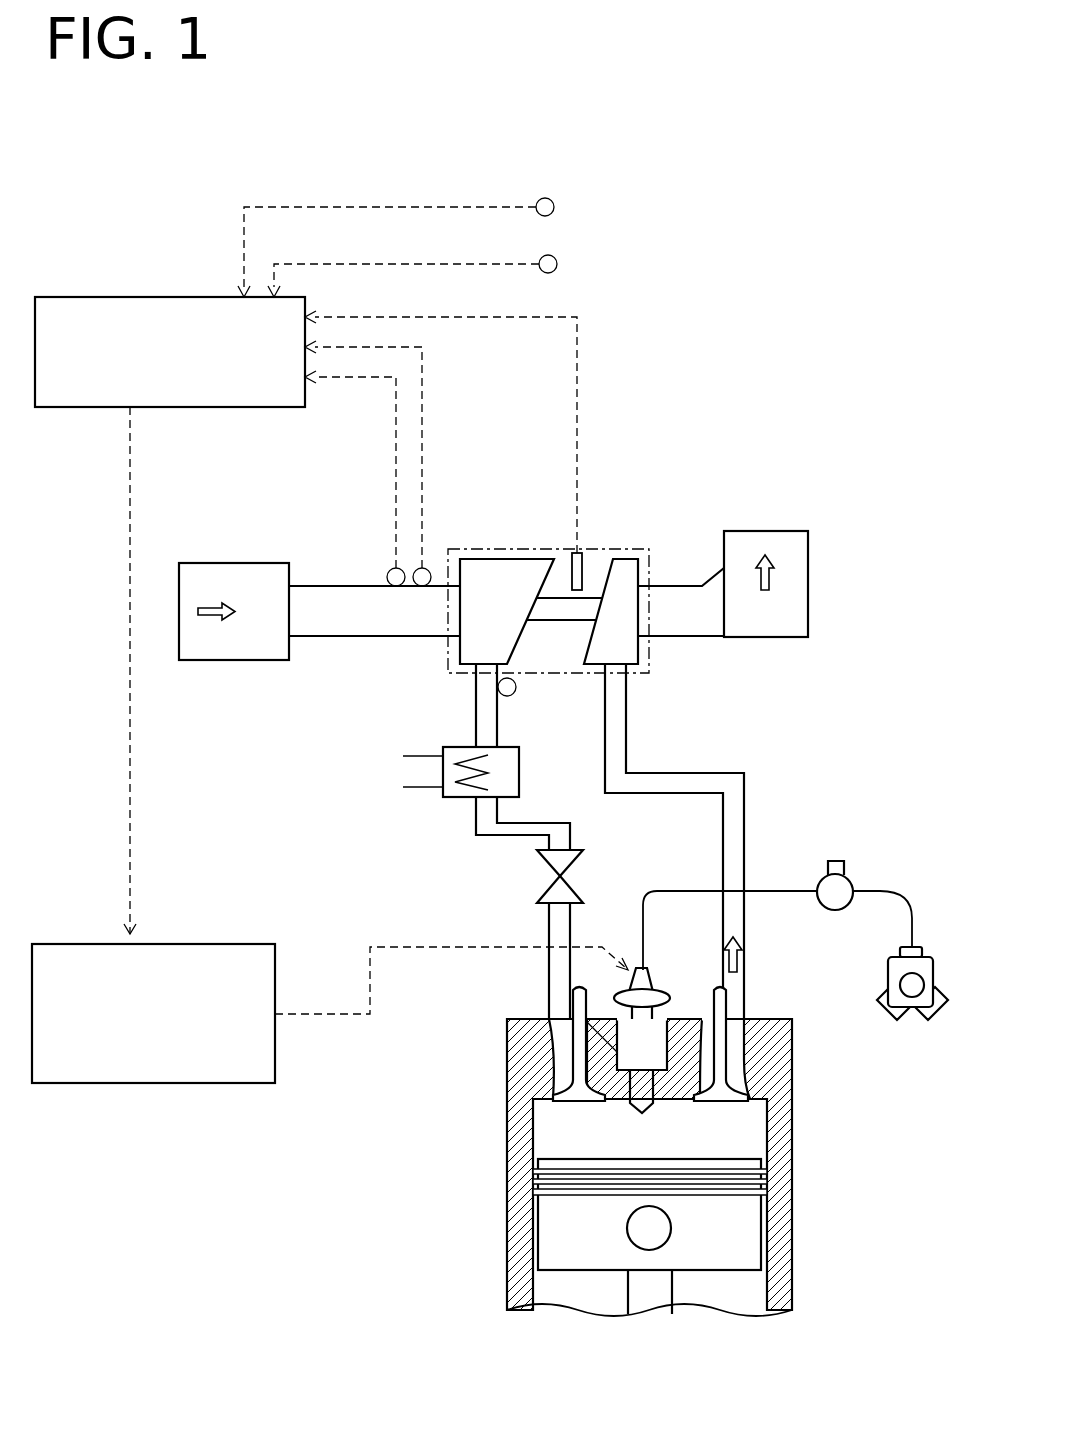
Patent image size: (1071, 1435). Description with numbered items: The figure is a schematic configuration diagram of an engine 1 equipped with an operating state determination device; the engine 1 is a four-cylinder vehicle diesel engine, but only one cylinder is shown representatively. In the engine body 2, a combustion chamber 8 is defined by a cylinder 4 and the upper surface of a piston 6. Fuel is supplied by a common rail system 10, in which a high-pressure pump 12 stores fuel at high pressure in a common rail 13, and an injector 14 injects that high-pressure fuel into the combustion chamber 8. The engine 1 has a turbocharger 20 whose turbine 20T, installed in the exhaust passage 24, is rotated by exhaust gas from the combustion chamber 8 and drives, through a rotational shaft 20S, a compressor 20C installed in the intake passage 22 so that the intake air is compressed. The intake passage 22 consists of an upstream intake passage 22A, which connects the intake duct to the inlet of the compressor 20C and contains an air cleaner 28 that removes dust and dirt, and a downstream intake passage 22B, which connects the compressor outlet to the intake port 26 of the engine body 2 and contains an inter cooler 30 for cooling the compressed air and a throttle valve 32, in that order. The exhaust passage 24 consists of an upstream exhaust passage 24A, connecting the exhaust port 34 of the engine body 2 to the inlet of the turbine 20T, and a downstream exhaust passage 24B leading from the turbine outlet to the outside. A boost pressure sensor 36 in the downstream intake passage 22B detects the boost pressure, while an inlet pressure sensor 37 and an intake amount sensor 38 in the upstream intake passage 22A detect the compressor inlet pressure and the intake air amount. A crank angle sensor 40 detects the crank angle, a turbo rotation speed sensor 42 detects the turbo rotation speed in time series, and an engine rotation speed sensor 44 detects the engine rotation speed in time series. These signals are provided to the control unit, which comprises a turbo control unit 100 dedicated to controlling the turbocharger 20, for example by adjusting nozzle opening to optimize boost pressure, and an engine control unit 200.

The engine 1 is at (858, 160).
The engine body 2 is at (473, 1018).
The cylinder 4 is at (792, 1210).
The piston 6 is at (753, 1258).
The combustion chamber 8 is at (745, 1130).
The common rail system 10 is at (866, 838).
The high-pressure pump 12 is at (930, 957).
The common rail 13 is at (841, 910).
The injector 14 is at (648, 972).
The turbocharger 20 is at (553, 574).
The compressor 20C is at (460, 650).
The rotational shaft 20S is at (553, 620).
The turbine 20T is at (640, 575).
The intake passage 22 is at (420, 666).
The upstream intake passage 22A is at (325, 586).
The downstream intake passage 22B is at (473, 827).
The exhaust passage 24 is at (769, 775).
The upstream exhaust passage 24A is at (680, 793).
The downstream exhaust passage 24B is at (808, 590).
The intake port 26 is at (558, 1050).
The air cleaner 28 is at (229, 563).
The inter cooler 30 is at (519, 795).
The throttle valve 32 is at (537, 895).
The exhaust port 34 is at (750, 1052).
The boost pressure sensor 36 is at (516, 695).
The inlet pressure sensor 37 is at (425, 568).
The intake amount sensor 38 is at (393, 568).
The crank angle sensor 40 is at (555, 207).
The turbo rotation speed sensor 42 is at (575, 553).
The engine rotation speed sensor 44 is at (558, 264).
The turbo control unit 100 is at (160, 297).
The engine control unit 200 is at (172, 944).